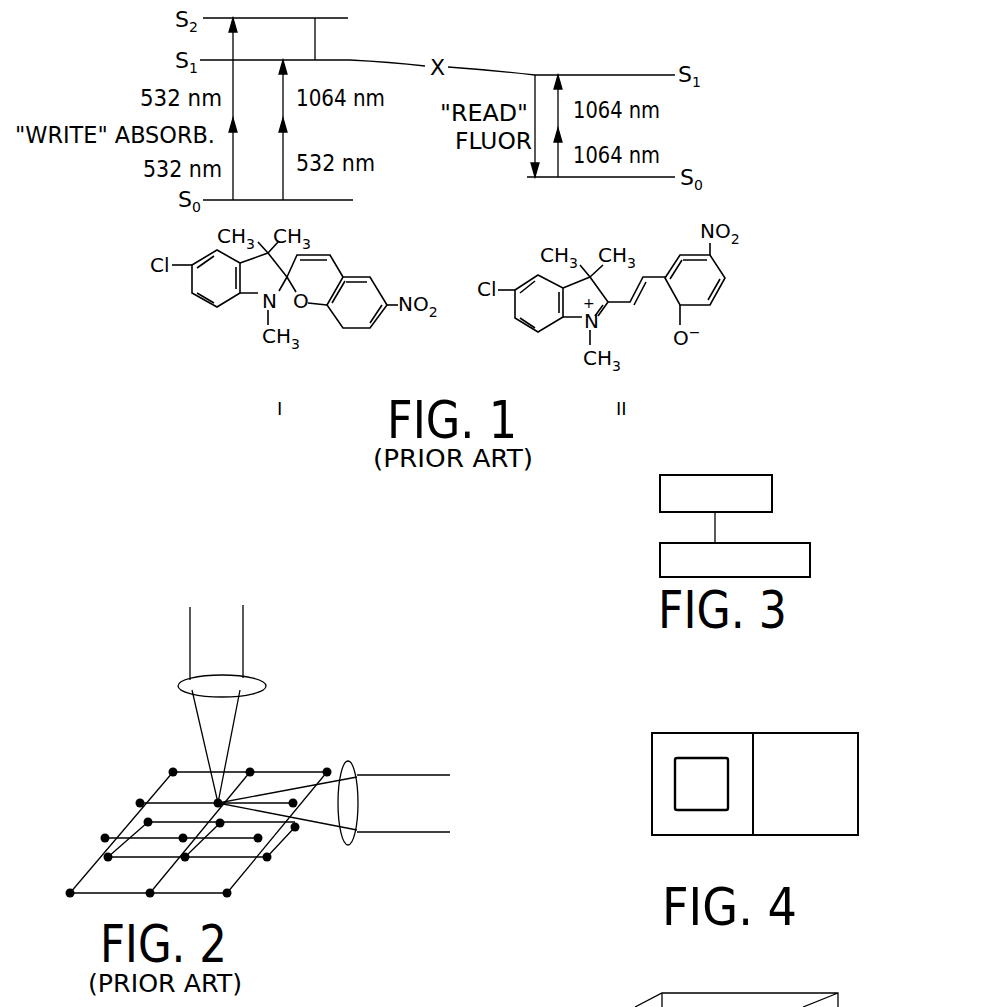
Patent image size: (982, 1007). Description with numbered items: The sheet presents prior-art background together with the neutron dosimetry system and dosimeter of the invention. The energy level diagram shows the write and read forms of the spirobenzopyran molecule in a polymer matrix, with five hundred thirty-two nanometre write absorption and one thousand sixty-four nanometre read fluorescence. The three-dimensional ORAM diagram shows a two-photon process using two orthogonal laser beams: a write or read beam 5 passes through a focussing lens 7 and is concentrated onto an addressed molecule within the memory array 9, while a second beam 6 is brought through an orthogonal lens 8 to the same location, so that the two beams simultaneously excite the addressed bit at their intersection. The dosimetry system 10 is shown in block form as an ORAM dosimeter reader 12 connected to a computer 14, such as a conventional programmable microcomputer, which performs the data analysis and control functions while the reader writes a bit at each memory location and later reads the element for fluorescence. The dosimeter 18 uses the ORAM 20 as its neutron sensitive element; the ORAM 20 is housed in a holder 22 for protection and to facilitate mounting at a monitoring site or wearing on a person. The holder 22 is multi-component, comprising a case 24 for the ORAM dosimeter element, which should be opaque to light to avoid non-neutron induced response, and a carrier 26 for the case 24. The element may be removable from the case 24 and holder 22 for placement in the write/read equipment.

In FIG. 2, the write laser beam 5 is at (243, 637).
In FIG. 2, the read/fluorescence beam 6 is at (398, 773).
In FIG. 2, the focusing lens 7 is at (183, 690).
In FIG. 2, the collection lens 8 is at (353, 837).
In FIG. 2, the three-dimensional memory array 9 is at (123, 820).
In FIG. 3, the system 10 is at (798, 471).
In FIG. 3, the ORAM dosimeter reader 12 is at (742, 475).
In FIG. 3, the computer 14 is at (755, 542).
In FIG. 4, the dosimeter 18 is at (661, 849).
In FIG. 4, the ORAM 20 is at (675, 783).
In FIG. 4, the holder 22 is at (801, 726).
In FIG. 4, the case 24 is at (713, 733).
In FIG. 4, the carrier 26 is at (812, 835).